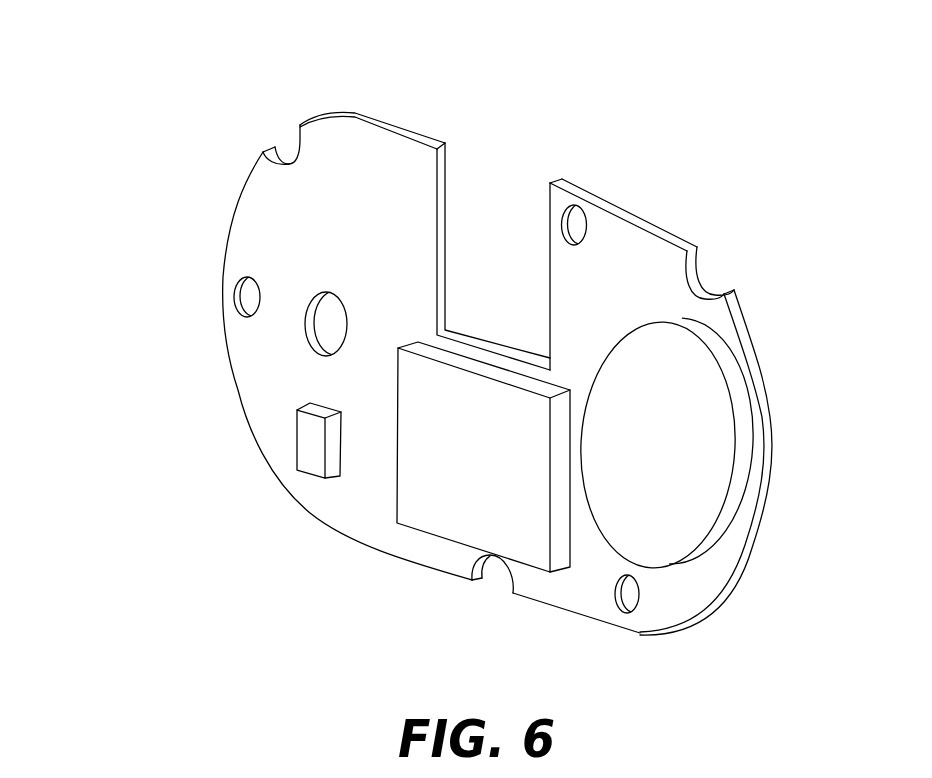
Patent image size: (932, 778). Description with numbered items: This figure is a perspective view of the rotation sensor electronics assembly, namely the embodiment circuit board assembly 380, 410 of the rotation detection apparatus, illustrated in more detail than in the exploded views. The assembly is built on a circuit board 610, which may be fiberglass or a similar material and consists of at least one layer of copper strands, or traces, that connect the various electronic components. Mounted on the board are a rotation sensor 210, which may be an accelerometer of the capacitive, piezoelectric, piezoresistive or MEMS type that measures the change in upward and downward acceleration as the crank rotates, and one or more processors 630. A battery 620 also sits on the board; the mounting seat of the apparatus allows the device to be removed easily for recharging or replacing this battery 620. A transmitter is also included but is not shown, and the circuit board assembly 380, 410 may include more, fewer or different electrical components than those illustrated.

The circuit board assembly 380 is at (428, 334).
The circuit board assembly 410 is at (188, 61).
The circuit board 610 is at (593, 182).
The battery 620 is at (707, 342).
The processor 630 is at (427, 535).
The rotation sensor 210 is at (297, 440).